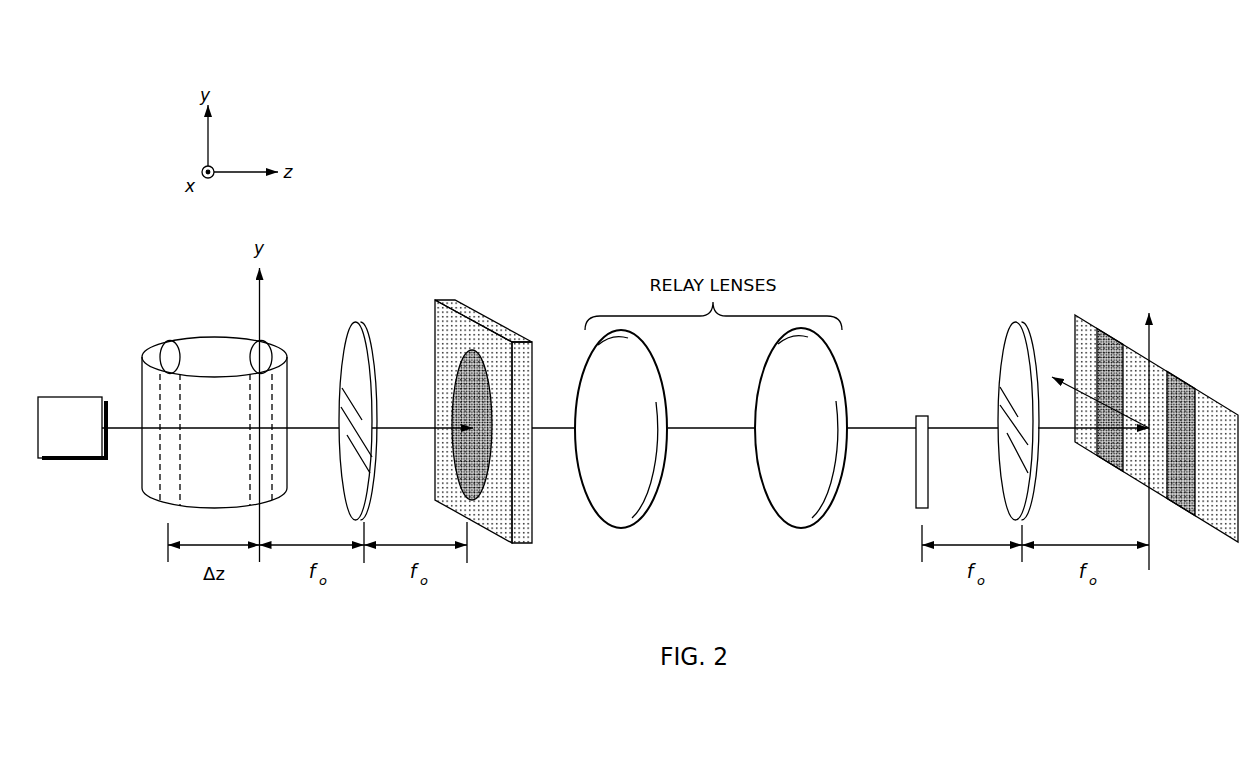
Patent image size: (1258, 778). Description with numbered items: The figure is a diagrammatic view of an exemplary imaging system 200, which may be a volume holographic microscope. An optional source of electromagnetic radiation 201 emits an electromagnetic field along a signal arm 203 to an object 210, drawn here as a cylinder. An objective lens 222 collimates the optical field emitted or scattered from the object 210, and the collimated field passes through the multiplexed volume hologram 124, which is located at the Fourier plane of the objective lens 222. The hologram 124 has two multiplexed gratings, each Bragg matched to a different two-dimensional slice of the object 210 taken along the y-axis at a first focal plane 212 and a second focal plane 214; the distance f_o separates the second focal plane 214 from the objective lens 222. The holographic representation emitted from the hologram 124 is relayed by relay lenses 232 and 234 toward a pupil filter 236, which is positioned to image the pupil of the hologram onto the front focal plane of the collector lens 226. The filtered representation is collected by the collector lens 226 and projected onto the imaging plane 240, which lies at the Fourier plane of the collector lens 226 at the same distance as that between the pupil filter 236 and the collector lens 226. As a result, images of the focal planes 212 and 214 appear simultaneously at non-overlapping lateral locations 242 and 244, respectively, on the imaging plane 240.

The imaging system 200 is at (757, 228).
The source of electromagnetic radiation 201 is at (72, 427).
The signal arm 203 is at (127, 428).
The object 210 is at (212, 348).
The first focal plane 212 is at (160, 477).
The second focal plane 214 is at (272, 467).
The objective lens 222 is at (343, 350).
The multiplexed volume hologram 124 is at (533, 543).
The relay lens 232 is at (640, 520).
The relay lens 234 is at (765, 490).
The pupil filter 236 is at (916, 497).
The collector lens 226 is at (998, 395).
The imaging plane 240 is at (1224, 533).
The lateral location 242 is at (1102, 332).
The lateral location 244 is at (1190, 388).